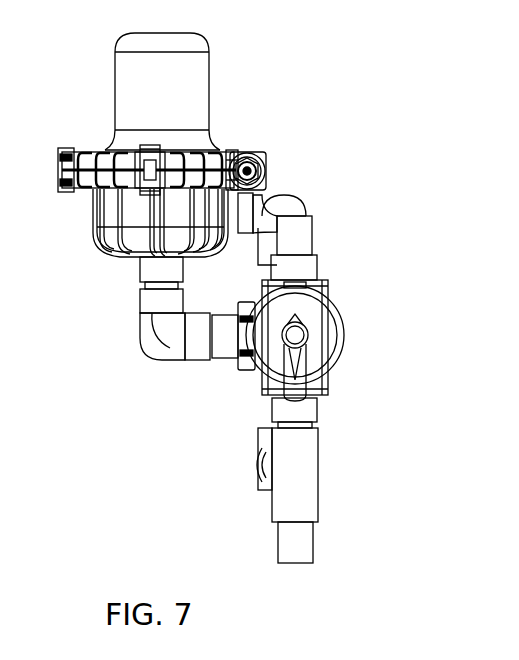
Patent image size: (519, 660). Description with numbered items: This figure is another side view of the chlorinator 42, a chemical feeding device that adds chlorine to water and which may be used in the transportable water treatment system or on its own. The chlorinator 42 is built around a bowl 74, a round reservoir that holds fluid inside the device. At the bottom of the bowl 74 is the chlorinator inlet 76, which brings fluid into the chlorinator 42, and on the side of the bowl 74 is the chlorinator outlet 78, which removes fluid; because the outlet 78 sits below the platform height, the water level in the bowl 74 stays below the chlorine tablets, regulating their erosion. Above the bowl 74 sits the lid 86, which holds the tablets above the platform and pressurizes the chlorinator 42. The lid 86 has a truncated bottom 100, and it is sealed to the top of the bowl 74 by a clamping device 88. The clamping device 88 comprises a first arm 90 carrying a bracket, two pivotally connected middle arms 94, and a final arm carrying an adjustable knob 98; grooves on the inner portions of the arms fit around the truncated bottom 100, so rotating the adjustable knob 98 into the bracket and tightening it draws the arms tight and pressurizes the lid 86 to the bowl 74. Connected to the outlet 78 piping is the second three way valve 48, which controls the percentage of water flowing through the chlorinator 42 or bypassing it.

The chlorinator 42 is at (242, 70).
The lid 86 is at (126, 70).
The truncated bottom 100 is at (118, 142).
The middle arms 94 is at (95, 148).
The first arm 90 is at (205, 148).
The clamping device 88 is at (257, 129).
The adjustable knob 98 is at (252, 160).
The bowl 74 is at (112, 230).
The chlorinator inlet 76 is at (143, 318).
The chlorinator outlet 78 is at (272, 205).
The second three way valve 48 is at (330, 292).